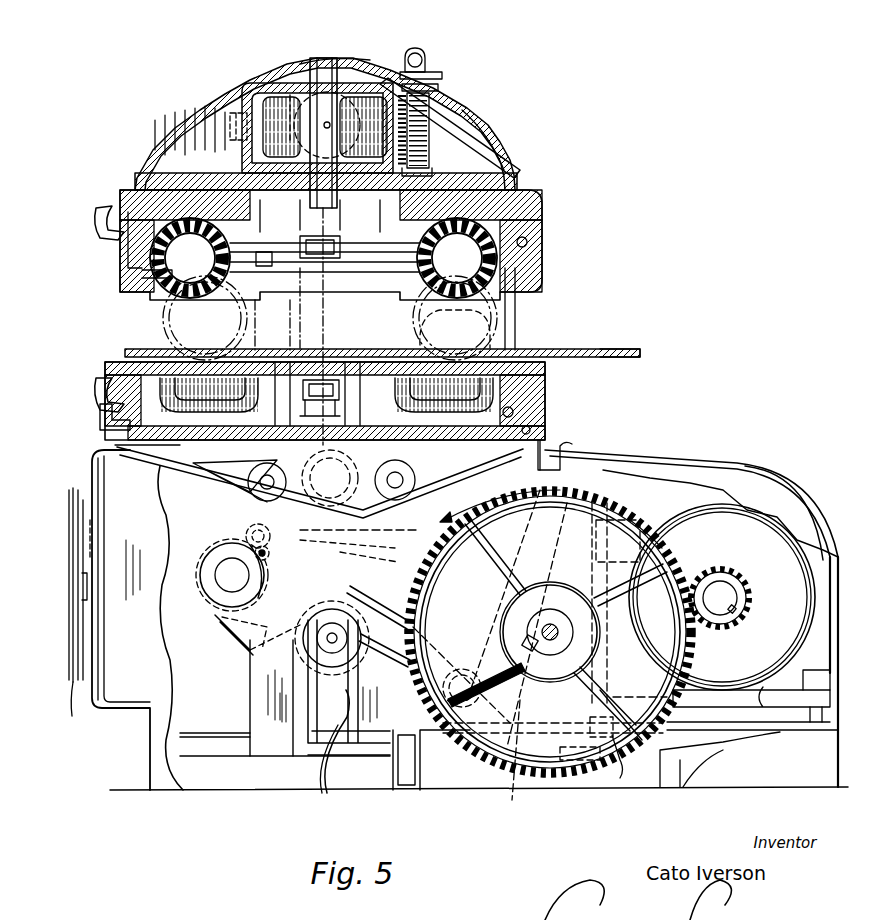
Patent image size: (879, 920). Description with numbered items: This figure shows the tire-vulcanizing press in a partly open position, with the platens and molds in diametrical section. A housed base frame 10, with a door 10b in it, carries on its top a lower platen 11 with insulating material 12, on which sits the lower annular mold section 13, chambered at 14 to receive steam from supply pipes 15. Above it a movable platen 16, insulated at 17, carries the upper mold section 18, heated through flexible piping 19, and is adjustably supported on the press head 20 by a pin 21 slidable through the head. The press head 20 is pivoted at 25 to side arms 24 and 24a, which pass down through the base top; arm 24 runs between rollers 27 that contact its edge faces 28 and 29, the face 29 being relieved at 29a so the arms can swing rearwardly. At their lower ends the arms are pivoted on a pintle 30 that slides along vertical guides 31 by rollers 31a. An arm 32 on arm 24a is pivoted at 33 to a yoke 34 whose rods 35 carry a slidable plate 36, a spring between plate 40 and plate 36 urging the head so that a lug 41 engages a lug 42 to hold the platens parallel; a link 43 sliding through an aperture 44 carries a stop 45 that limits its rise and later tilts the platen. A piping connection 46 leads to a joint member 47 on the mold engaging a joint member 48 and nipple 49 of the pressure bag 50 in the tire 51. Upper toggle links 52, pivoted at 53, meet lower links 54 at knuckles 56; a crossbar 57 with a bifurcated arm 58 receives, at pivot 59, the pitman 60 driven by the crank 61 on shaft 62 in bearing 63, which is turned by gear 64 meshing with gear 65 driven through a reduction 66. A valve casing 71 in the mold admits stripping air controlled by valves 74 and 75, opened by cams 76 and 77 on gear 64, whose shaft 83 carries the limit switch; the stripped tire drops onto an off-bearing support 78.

The base frame 10 is at (100, 452).
The door 10b is at (90, 692).
The lower platen 11 is at (122, 438).
The insulating material 12 is at (94, 468).
The lower annular mold section 13 is at (540, 350).
The chamber 14 is at (108, 424).
The supply pipes 15 is at (564, 452).
The movable upper platen 16 is at (478, 132).
The insulation 17 is at (512, 176).
The upper mold section 18 is at (528, 192).
The flexible piping 19 is at (518, 313).
The press head 20 is at (280, 90).
The pin 21 is at (333, 58).
The side arm 24 is at (368, 532).
The side arm 24a is at (445, 338).
The pivot 25 is at (312, 92).
The rollers 27 is at (236, 488).
The edge face 28 is at (247, 480).
The edge face 29 is at (374, 564).
The relieved portion 29a is at (376, 553).
The pintle 30 is at (362, 662).
The vertical guides 31 is at (332, 795).
The rollers 31a is at (332, 657).
The arm 32 is at (362, 56).
The pivot 33 is at (424, 58).
The yoke 34 is at (442, 75).
The rods 35 is at (432, 105).
The slidable plate 36 is at (438, 87).
The plate 40 is at (490, 138).
The lug 41 is at (228, 108).
The lug 42 is at (200, 133).
The link 43 is at (497, 302).
The aperture 44 is at (530, 418).
The stop 45 is at (448, 518).
The piping connection 46 is at (320, 388).
The joint member 47 is at (312, 322).
The joint member 48 is at (298, 242).
The nipple 49 is at (240, 310).
The annular pressure bag 50 is at (158, 282).
The tire 51 is at (142, 274).
The upper toggle links 52 is at (250, 524).
The pivot 53 is at (395, 506).
The lower toggle links 54 is at (242, 628).
The toggle knuckle 56 is at (222, 586).
The crossbar 57 is at (250, 637).
The bifurcated arm 58 is at (222, 545).
The pivot 59 is at (238, 532).
The pitman 60 is at (388, 606).
The crank 61 is at (488, 746).
The shaft 62 is at (548, 650).
The bearing 63 is at (484, 744).
The gear 64 is at (632, 512).
The gear 65 is at (796, 636).
The reduction 66 is at (768, 522).
The valve casing 71 is at (108, 236).
The valve 74 is at (636, 526).
The valve 75 is at (658, 540).
The cam 76 is at (600, 780).
The cam 77 is at (598, 542).
The off-bearing tire support 78 is at (605, 350).
The shaft 83 is at (560, 632).